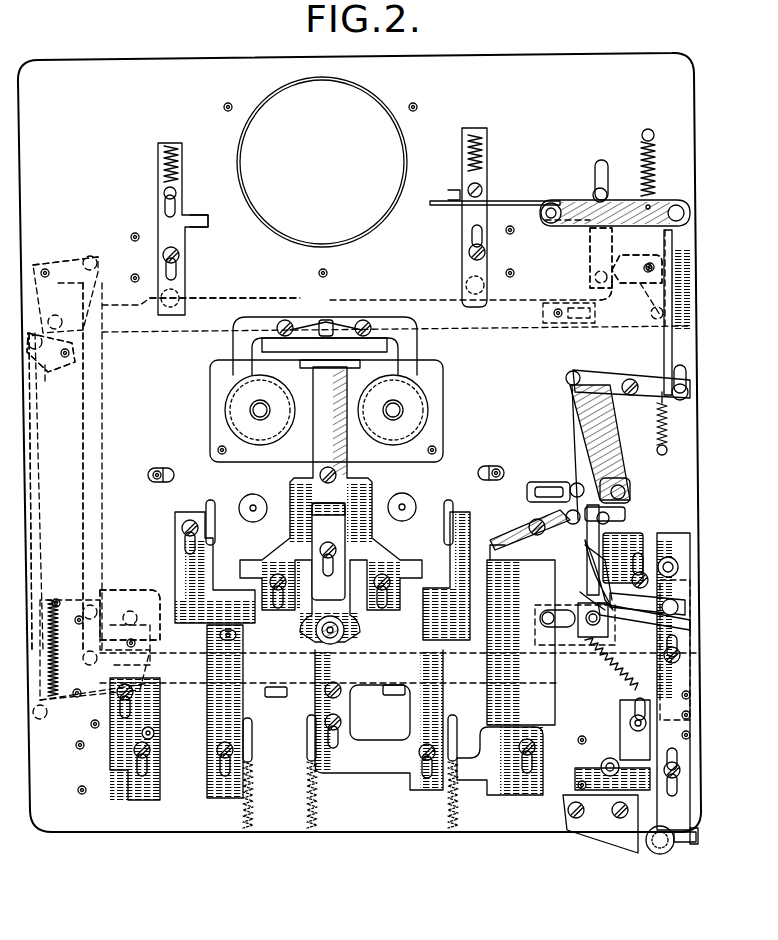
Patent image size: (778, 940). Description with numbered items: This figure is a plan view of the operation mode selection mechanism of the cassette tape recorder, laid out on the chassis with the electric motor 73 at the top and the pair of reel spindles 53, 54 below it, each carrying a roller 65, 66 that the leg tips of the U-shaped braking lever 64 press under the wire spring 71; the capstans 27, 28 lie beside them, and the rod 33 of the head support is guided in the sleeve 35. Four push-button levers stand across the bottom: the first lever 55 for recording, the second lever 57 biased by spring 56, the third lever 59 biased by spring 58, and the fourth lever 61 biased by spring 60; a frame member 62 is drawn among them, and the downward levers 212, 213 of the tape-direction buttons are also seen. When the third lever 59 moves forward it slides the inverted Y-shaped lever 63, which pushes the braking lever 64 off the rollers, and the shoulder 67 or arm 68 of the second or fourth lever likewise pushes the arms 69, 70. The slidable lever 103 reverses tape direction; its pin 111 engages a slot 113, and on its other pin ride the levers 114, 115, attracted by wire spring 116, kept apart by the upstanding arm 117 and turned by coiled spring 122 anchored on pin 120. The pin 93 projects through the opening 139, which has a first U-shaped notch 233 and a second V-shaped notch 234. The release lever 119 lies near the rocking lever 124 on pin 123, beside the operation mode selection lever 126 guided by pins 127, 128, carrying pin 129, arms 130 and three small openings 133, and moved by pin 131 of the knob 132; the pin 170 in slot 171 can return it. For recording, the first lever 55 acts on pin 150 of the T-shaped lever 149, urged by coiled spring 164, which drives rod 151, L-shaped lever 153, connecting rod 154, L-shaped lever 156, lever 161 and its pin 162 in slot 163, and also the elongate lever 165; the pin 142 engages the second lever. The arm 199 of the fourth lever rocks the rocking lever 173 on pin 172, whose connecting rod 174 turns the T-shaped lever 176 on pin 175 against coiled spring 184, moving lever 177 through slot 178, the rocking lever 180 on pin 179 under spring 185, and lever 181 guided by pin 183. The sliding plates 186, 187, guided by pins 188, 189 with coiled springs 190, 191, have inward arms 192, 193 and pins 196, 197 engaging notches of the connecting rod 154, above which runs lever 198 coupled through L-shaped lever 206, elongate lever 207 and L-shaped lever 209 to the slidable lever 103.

The capstan 27 is at (250, 505).
The capstan 28 is at (403, 505).
The rod 33 is at (316, 630).
The sleeve 35 is at (338, 632).
The reel spindle 53 is at (250, 410).
The reel spindle 54 is at (403, 410).
The first lever 55 is at (145, 800).
The spring 56 is at (255, 805).
The second lever 57 is at (222, 800).
The spring 58 is at (318, 806).
The third lever 59 is at (420, 795).
The spring 60 is at (460, 790).
The fourth lever 61 is at (517, 798).
The frame member 62 is at (342, 688).
The inverted Y-shaped lever 63 is at (360, 490).
The U-shaped braking lever 64 is at (418, 345).
The roller 65 is at (232, 395).
The roller 66 is at (420, 395).
The shoulder 67 is at (235, 570).
The arm 68 is at (420, 590).
The arm 69 is at (252, 555).
The arm 70 is at (410, 545).
The wire spring 71 is at (328, 325).
The electric motor 73 is at (322, 162).
The upstanding pin 93 is at (610, 518).
The slidable lever 103 is at (487, 690).
The upstanding pin 111 is at (540, 618).
The slot 113 is at (588, 630).
The lever 114 is at (595, 568).
The lever 115 is at (690, 626).
The wire spring 116 is at (595, 600).
The upstanding arm 117 is at (680, 600).
The release lever 119 is at (630, 726).
The pin 120 is at (635, 718).
The coiled spring 122 is at (598, 660).
The pin 123 is at (622, 750).
The rocking lever 124 is at (583, 768).
The operation mode selection lever 126 is at (685, 750).
The pin 127 is at (685, 774).
The pin 128 is at (690, 685).
The pin 129 is at (680, 607).
The upstanding arms 130 is at (692, 835).
The pin 131 is at (692, 845).
The operation mode selection knob 132 is at (660, 855).
The small openings 133 is at (690, 716).
The opening 139 is at (625, 508).
The pin 142 is at (220, 636).
The T-shaped lever 149 is at (75, 725).
The pin 150 is at (155, 733).
The rod 151 is at (36, 440).
The L-shaped lever 153 is at (45, 380).
The connecting rod 154 is at (606, 320).
The L-shaped lever 156 is at (620, 262).
The lever 161 is at (590, 262).
The upstanding pin 162 is at (594, 192).
The slot 163 is at (597, 163).
The coiled spring 164 is at (78, 588).
The elongate lever 165 is at (112, 648).
The upstanding pin 170 is at (678, 566).
The slot 171 is at (690, 560).
The pin 172 is at (540, 536).
The rocking lever 173 is at (528, 523).
The connecting rod 174 is at (572, 418).
The pin 175 is at (625, 395).
The T-shaped lever 176 is at (578, 372).
The lever 177 is at (670, 345).
The slot 178 is at (673, 372).
The pin 179 is at (548, 200).
The rocking lever 180 is at (583, 230).
The lever 181 is at (553, 482).
The pin 183 is at (578, 485).
The coiled spring 184 is at (666, 455).
The spring 185 is at (652, 175).
The sliding plate 186 is at (158, 225).
The sliding plate 187 is at (462, 222).
The pin 188 is at (164, 193).
The pin 189 is at (472, 185).
The coiled spring 190 is at (164, 165).
The coiled spring 191 is at (484, 155).
The inwardly extending arm 192 is at (208, 224).
The inwardly extending arm 193 is at (448, 195).
The pin 196 is at (175, 292).
The pin 197 is at (466, 285).
The lever 198 is at (267, 300).
The laterally extending arm 199 is at (508, 560).
The L-shaped lever 206 is at (72, 256).
The elongate lever 207 is at (90, 395).
The L-shaped lever 209 is at (130, 625).
The lever 212 is at (395, 696).
The lever 213 is at (270, 698).
The first U-shaped notch 233 is at (600, 560).
The second V-shaped notch 234 is at (648, 548).